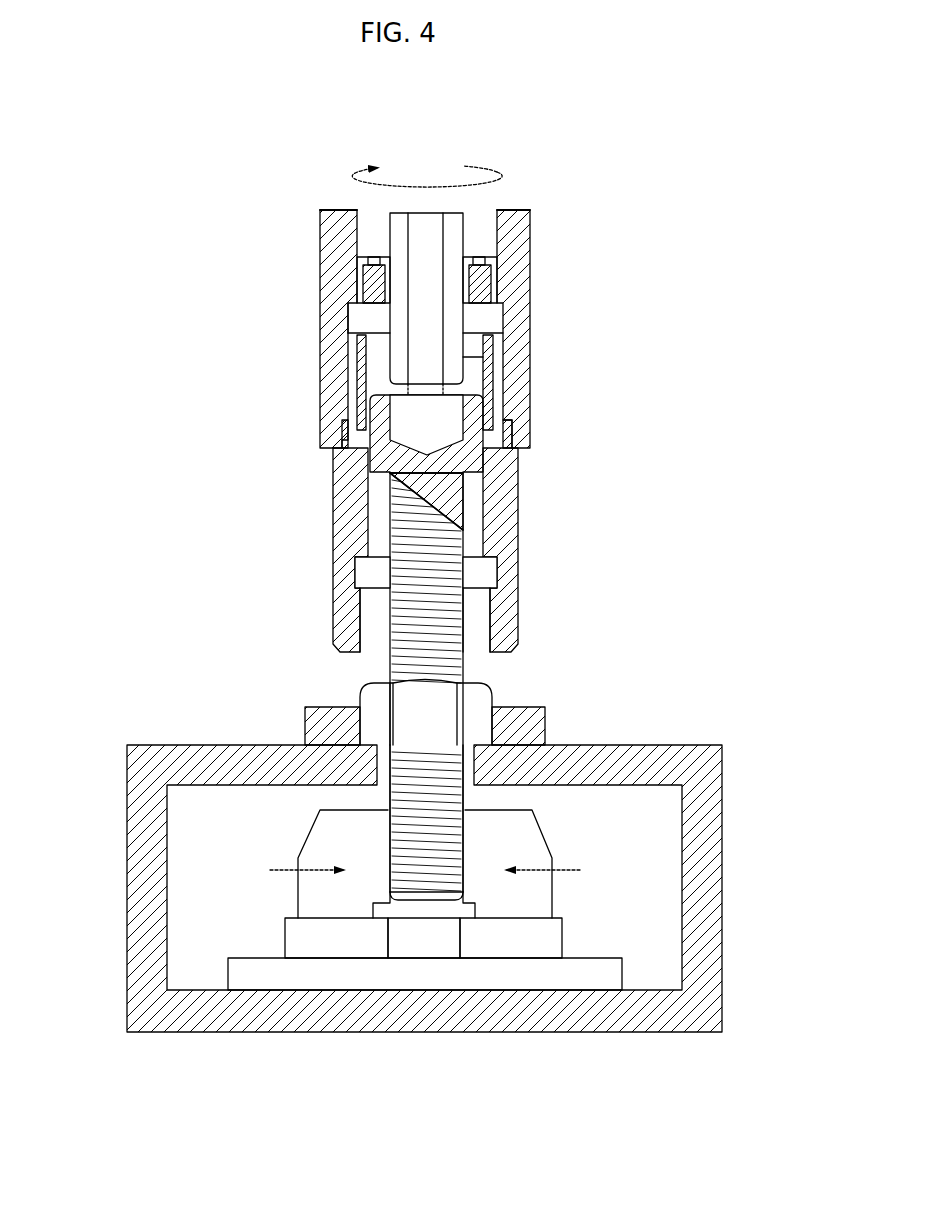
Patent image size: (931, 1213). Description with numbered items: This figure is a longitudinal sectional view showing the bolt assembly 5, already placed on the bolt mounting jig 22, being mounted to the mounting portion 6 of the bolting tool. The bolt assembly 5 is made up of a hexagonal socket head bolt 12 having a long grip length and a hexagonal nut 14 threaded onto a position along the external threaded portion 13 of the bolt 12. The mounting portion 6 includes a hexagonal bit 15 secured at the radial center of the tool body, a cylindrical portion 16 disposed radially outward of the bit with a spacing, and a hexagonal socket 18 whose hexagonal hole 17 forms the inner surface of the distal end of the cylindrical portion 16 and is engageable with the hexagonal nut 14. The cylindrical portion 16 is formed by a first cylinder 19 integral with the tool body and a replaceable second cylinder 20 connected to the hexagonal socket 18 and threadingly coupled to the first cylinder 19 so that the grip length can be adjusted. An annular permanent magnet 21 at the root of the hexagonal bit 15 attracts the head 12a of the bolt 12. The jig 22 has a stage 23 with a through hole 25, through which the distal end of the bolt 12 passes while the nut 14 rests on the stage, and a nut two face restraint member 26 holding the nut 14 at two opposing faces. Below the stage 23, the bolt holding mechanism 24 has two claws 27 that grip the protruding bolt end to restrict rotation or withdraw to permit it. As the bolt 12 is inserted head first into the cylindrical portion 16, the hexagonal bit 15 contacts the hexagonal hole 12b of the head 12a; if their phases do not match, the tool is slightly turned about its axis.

The bolt assembly 5 is at (482, 505).
The mounting portion 6 is at (396, 343).
The hexagonal socket head bolt 12 is at (481, 641).
The head 12a is at (510, 447).
The hexagonal hole 12b is at (455, 393).
The external threaded portion 13 is at (470, 604).
The hexagonal nut 14 is at (478, 700).
The hexagonal bit 15 is at (490, 350).
The cylindrical portion 16 is at (404, 641).
The hexagonal hole 17 is at (372, 622).
The hexagonal socket 18 is at (515, 628).
The first cylinder 19 is at (328, 388).
The second cylinder 20 is at (333, 485).
The annular permanent magnet 21 is at (500, 275).
The bolt mounting jig 22 is at (436, 830).
The stage 23 is at (172, 745).
The bolt holding mechanism 24 is at (650, 868).
The through hole 25 is at (367, 712).
The nut two face restraint member 26 is at (305, 713).
The claws 27 is at (305, 840).